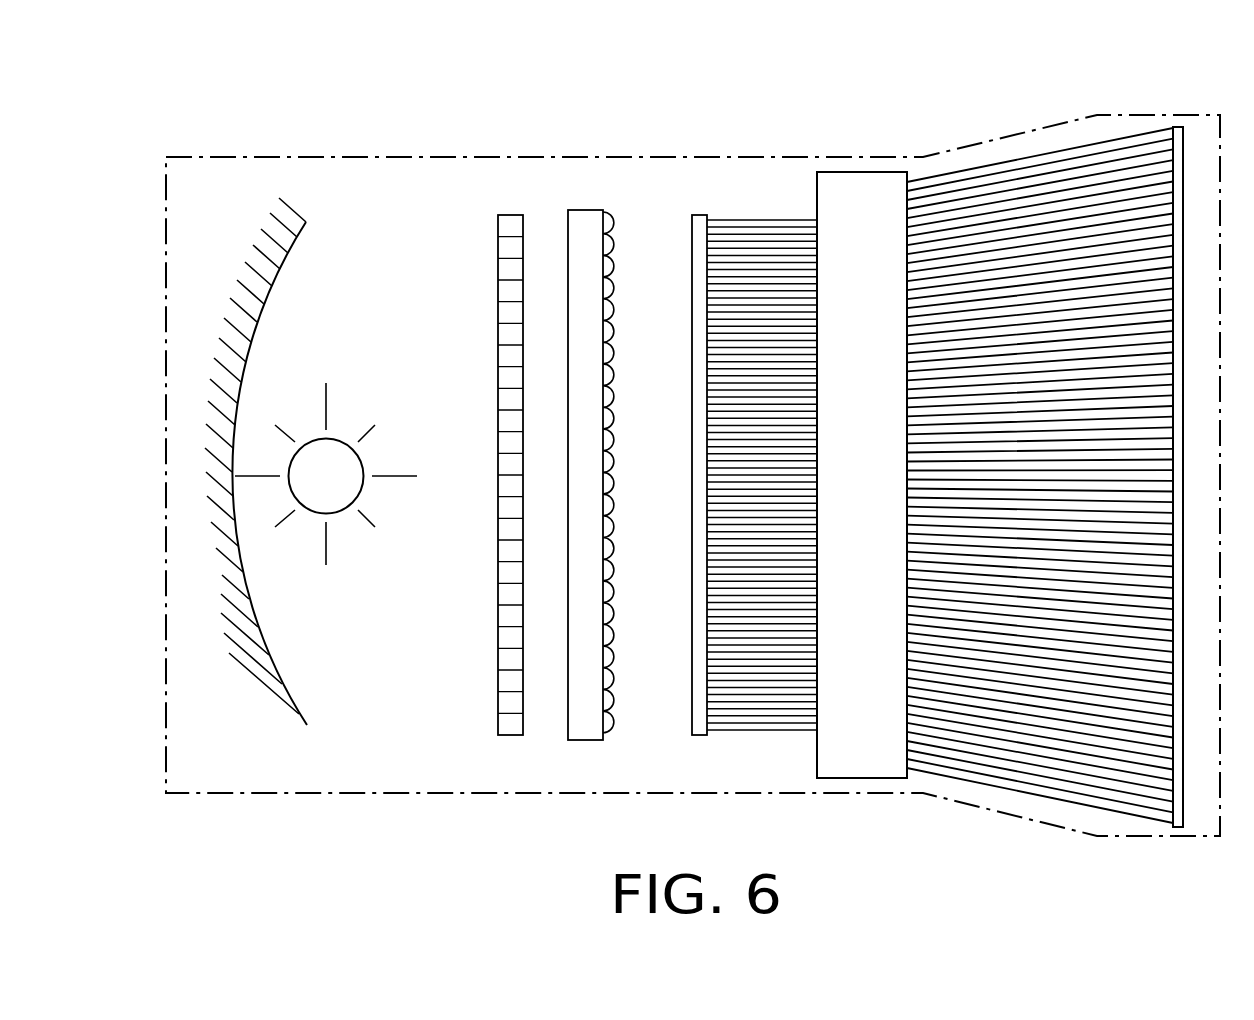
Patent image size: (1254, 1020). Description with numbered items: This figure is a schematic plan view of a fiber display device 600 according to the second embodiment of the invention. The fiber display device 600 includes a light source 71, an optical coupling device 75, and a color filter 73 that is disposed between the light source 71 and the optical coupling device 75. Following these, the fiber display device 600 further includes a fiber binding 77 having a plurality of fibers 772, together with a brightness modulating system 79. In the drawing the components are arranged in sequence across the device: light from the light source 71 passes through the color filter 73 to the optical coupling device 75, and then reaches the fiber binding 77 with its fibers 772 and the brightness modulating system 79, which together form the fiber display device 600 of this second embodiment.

The fiber display device 600 is at (635, 36).
The light source 71 is at (328, 480).
The color filter 73 is at (508, 223).
The optical coupling device 75 is at (587, 220).
The fiber binding 77 is at (741, 215).
The fibers 772 is at (723, 218).
The brightness modulating system 79 is at (853, 185).